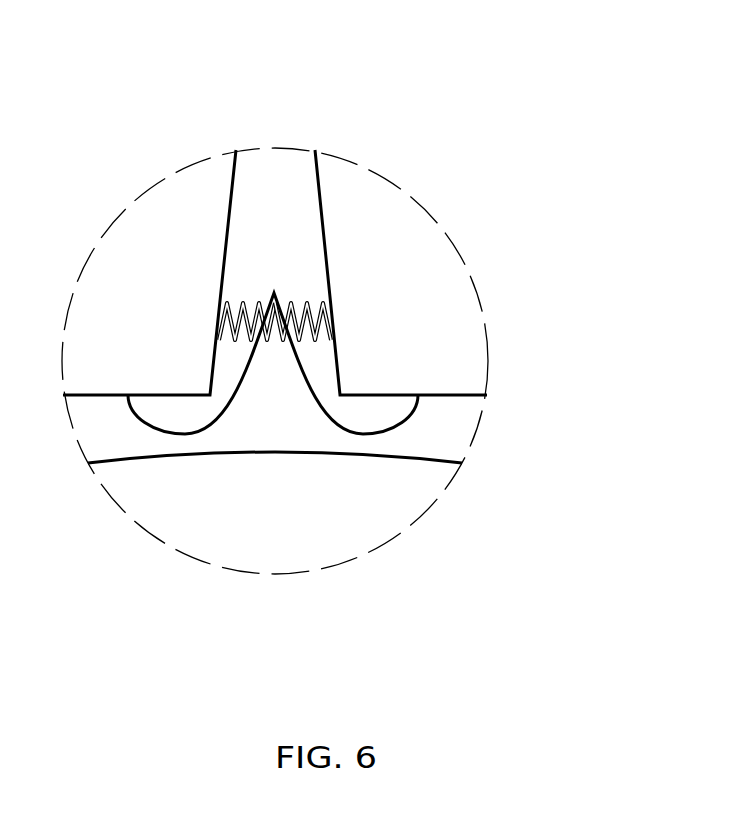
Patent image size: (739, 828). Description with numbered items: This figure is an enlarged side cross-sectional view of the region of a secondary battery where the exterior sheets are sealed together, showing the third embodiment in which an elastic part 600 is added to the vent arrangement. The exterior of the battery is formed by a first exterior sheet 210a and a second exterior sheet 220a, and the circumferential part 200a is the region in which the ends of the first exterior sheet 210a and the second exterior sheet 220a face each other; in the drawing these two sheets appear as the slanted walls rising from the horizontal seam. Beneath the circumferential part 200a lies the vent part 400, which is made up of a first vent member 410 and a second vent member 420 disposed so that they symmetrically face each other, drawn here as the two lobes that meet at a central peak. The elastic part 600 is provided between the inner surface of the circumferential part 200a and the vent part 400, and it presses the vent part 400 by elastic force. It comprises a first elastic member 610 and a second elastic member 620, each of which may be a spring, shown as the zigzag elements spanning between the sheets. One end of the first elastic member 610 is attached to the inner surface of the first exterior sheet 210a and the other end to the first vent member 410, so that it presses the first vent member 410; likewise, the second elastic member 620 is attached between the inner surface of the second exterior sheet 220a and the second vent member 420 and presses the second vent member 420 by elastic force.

The circumferential part 200a is at (300, 17).
The first exterior sheet 210a is at (328, 265).
The second exterior sheet 220a is at (222, 253).
The vent part 400 is at (530, 110).
The first vent member 410 is at (361, 434).
The second vent member 420 is at (185, 434).
The elastic part 600 is at (527, 577).
The first elastic member 610 is at (312, 305).
The second elastic member 620 is at (240, 303).